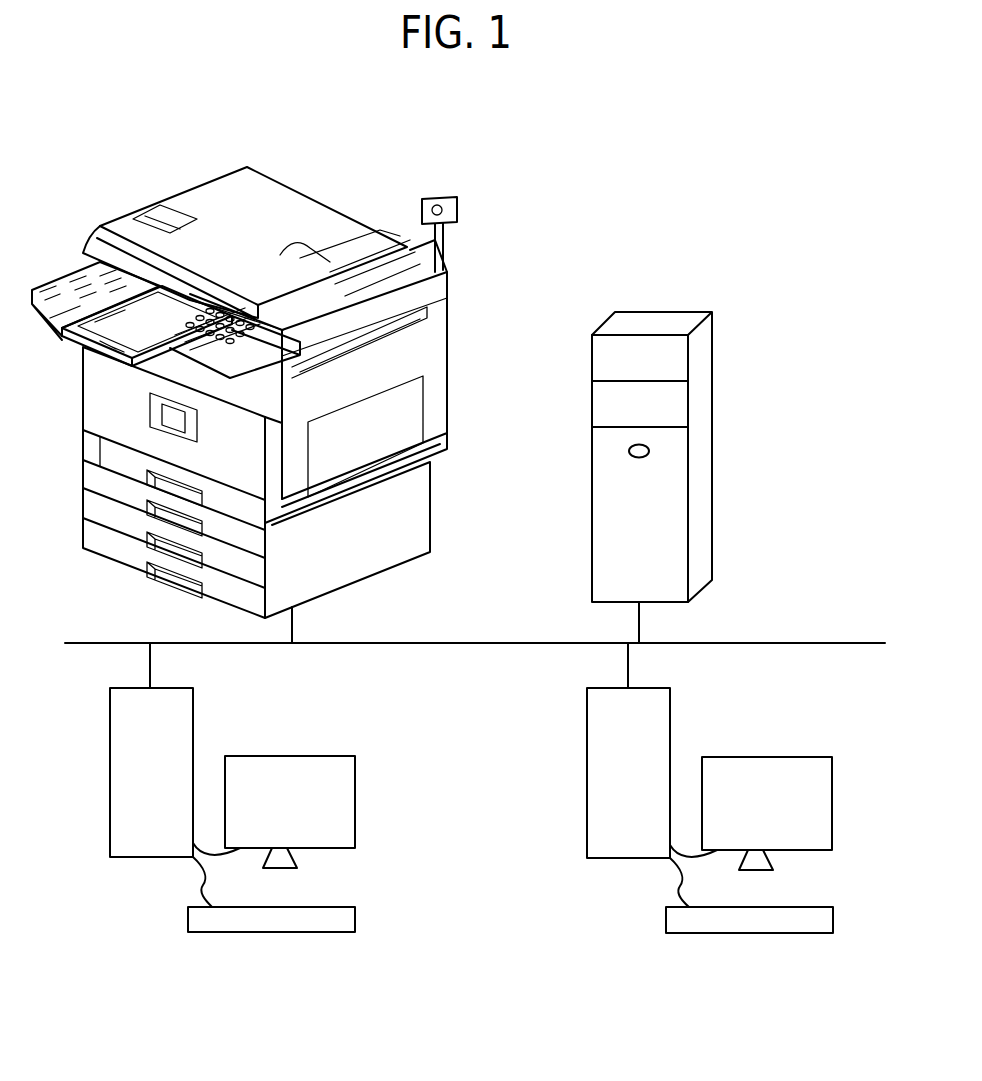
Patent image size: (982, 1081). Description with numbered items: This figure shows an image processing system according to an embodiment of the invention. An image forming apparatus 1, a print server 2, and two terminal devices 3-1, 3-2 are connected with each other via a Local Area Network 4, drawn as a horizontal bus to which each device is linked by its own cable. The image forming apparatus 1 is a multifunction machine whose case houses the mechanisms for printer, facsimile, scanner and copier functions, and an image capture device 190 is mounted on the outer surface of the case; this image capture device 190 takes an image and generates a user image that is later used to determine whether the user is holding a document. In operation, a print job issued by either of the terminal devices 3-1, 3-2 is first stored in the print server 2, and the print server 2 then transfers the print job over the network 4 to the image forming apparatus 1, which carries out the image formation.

The image forming apparatus 1 is at (367, 148).
The image capture device 190 is at (453, 200).
The print server 2 is at (700, 312).
The Local Area Network (LAN) 4 is at (818, 643).
The terminal device 3-1 is at (193, 707).
The terminal device 3-2 is at (670, 708).